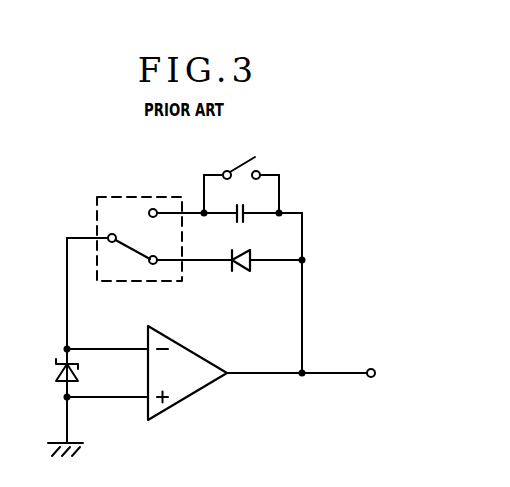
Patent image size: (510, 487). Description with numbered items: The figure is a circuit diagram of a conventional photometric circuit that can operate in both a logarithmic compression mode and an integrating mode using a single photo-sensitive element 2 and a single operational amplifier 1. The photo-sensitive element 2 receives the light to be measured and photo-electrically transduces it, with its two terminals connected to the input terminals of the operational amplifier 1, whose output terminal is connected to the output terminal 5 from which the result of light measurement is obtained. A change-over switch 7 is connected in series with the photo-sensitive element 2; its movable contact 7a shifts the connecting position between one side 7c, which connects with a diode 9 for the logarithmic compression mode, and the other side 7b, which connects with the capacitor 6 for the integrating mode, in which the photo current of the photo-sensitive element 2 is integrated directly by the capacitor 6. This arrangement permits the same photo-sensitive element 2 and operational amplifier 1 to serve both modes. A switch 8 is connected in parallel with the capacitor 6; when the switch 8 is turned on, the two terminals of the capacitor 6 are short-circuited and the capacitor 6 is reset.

The operational amplifier 1 is at (190, 349).
The photo-sensitive element 2 is at (79, 372).
The output terminal 5 is at (371, 368).
The capacitor 6 is at (240, 203).
The change-over switch 7 is at (150, 195).
The common contact of switch 7a is at (126, 236).
The other side of change-over switch 7b is at (163, 225).
The one side of change-over switch 7c is at (141, 267).
The switch 8 is at (236, 165).
The diode 9 is at (250, 251).